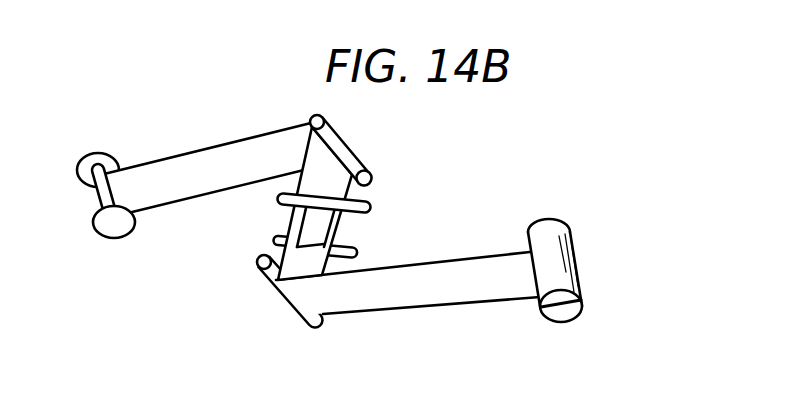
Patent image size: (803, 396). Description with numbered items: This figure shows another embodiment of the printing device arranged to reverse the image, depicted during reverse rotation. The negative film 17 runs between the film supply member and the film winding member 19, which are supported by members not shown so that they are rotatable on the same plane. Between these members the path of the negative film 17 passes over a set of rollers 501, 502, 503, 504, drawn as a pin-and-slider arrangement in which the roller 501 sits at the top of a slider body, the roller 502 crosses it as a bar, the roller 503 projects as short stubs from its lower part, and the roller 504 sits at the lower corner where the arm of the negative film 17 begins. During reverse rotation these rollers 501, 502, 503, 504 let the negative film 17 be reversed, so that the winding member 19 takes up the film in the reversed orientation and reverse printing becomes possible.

The negative film 17 is at (425, 308).
The film winding member 19 is at (572, 321).
The roller 501 is at (372, 174).
The roller 502 is at (371, 207).
The roller 503 is at (358, 256).
The roller 504 is at (322, 331).